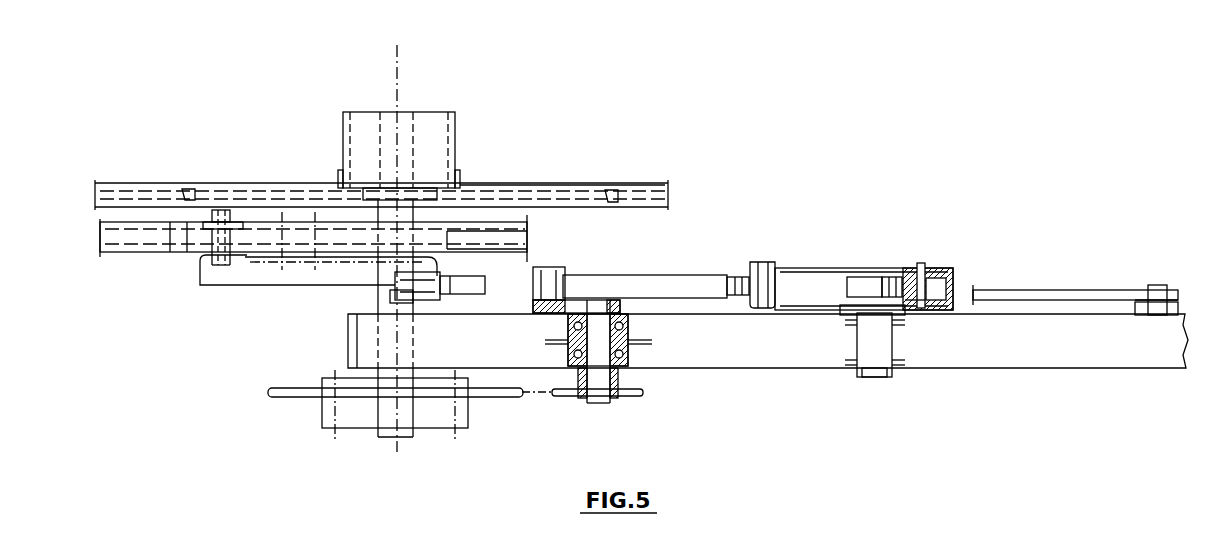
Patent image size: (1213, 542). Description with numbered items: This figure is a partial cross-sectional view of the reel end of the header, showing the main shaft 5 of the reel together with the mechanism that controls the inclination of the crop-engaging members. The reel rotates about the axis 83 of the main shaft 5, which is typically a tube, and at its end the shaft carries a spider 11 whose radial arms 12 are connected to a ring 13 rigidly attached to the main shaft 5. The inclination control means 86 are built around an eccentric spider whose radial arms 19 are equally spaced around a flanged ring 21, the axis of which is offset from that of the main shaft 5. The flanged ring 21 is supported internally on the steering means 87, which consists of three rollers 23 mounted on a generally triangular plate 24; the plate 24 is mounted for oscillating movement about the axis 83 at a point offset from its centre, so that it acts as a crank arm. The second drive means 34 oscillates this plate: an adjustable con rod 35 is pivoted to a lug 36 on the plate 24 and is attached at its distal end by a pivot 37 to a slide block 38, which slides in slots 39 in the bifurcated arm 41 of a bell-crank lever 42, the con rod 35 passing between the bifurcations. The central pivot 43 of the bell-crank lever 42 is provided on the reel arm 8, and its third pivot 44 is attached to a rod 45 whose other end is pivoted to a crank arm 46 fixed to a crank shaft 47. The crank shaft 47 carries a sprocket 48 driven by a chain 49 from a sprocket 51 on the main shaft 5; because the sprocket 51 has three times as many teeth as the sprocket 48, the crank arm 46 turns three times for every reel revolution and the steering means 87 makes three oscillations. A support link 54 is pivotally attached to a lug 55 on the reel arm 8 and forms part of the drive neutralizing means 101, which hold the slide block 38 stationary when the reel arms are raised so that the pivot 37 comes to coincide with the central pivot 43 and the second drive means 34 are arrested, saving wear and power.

The main shaft 5 is at (456, 140).
The reel arm 8 is at (1040, 369).
The spider 11 is at (143, 182).
The radial arm 12 is at (190, 188).
The ring 13 is at (528, 184).
The eccentric spider radial arm 19 is at (100, 238).
The flanged ring 21 is at (270, 222).
The roller 23 is at (243, 255).
The triangular plate 24 is at (290, 286).
The second drive means 34 is at (942, 240).
The adjustable con rod 35 is at (486, 284).
The lug 36 is at (394, 276).
The pivot 37 is at (912, 304).
The slide block 38 is at (940, 262).
The slot 39 is at (868, 276).
The bifurcated arm 41 is at (902, 262).
The bell-crank lever 42 is at (819, 268).
The central pivot 43 is at (878, 379).
The third bell-crank pivot 44 is at (762, 262).
The rod 45 is at (642, 282).
The crank arm 46 is at (556, 312).
The crank shaft 47 is at (599, 405).
The sprocket 48 is at (632, 398).
The chain 49 is at (536, 400).
The sprocket 51 is at (496, 398).
The support link 54 is at (1045, 290).
The lug 55 is at (1172, 304).
The axis 83 is at (400, 66).
The inclination control means 86 is at (155, 251).
The steering means 87 is at (224, 290).
The drive neutralizing means 101 is at (934, 224).